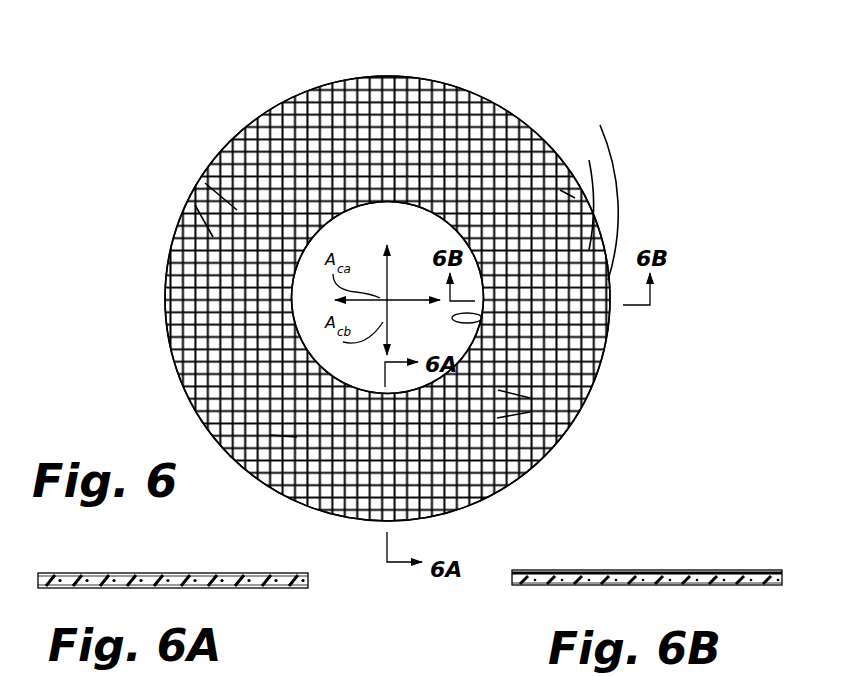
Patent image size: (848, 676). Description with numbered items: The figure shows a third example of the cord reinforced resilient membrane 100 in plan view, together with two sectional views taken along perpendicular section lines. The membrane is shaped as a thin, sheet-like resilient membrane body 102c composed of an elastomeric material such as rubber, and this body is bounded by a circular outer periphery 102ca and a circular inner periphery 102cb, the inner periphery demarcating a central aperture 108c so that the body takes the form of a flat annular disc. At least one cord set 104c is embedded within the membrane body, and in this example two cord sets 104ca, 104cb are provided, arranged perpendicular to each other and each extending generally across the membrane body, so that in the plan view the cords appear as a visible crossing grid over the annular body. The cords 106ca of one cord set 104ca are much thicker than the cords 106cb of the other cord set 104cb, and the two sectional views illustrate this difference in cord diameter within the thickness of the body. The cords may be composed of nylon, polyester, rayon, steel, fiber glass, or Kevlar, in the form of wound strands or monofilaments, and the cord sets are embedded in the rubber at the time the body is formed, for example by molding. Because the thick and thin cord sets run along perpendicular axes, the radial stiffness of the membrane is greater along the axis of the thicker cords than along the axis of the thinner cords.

In FIG. 6, the cord reinforced resilient membrane 100 is at (638, 143).
In FIG. 6, the membrane body 102c is at (207, 152).
In FIG. 6A, the membrane body 102c is at (180, 570).
In FIG. 6B, the membrane body 102c is at (647, 568).
In FIG. 6, the circular outer periphery 102ca is at (589, 206).
In FIG. 6, the circular inner periphery 102cb is at (482, 322).
In FIG. 6, the cord set 104c is at (553, 447).
In FIG. 6, the first cord set 104ca is at (565, 193).
In FIG. 6A, the first cord set 104ca is at (213, 573).
In FIG. 6B, the first cord set 104ca is at (718, 570).
In FIG. 6, the second cord set 104cb is at (297, 437).
In FIG. 6A, the second cord set 104cb is at (168, 593).
In FIG. 6B, the second cord set 104cb is at (670, 586).
In FIG. 6, the cords of first cord set 106ca is at (195, 205).
In FIG. 6, the cords of second cord set 106cb is at (497, 418).
In FIG. 6, the central aperture 108c is at (315, 340).